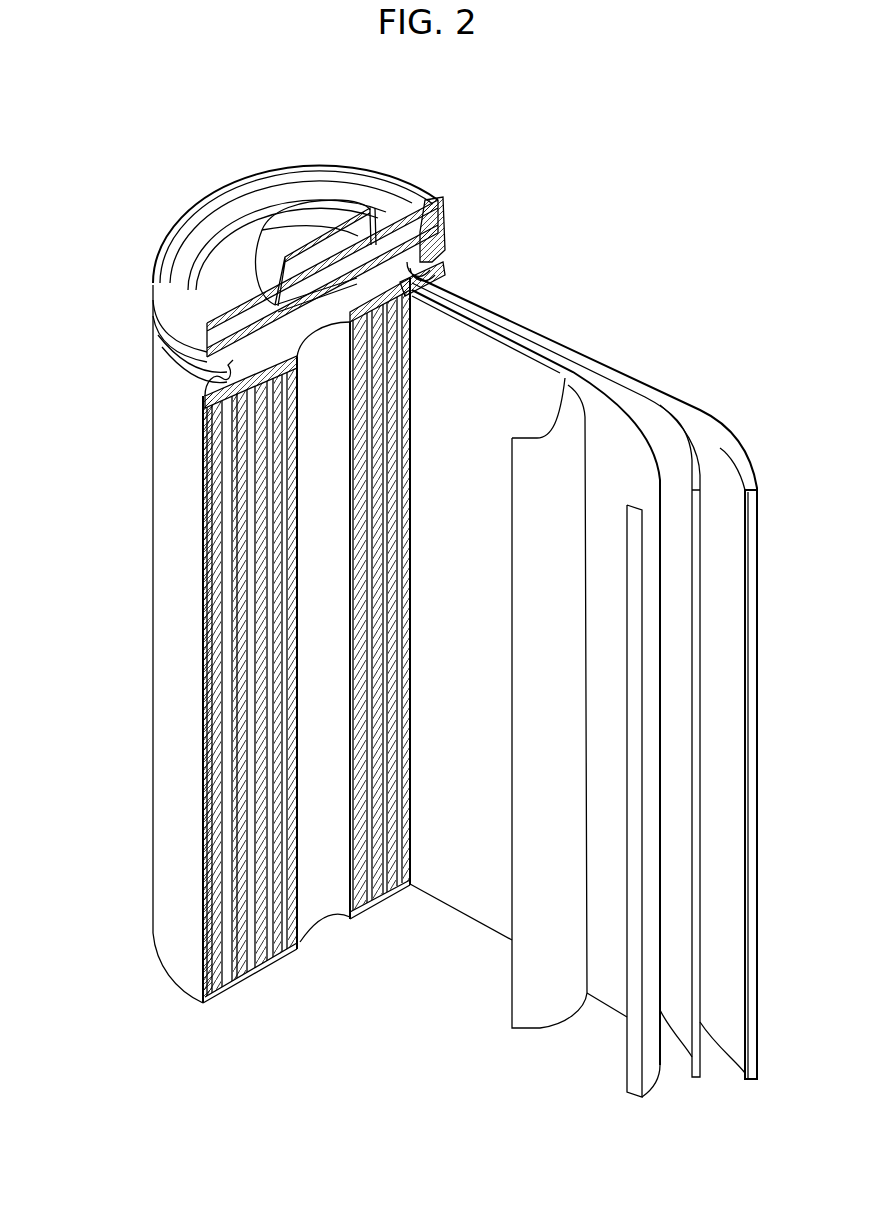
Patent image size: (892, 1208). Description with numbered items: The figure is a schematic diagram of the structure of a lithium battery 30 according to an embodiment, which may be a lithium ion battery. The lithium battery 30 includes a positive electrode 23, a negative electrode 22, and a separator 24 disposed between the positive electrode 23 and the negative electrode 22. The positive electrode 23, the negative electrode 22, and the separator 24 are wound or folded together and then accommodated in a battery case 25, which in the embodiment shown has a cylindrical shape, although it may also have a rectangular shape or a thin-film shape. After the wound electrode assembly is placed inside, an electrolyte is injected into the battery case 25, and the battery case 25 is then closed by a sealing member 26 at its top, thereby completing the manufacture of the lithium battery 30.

The lithium battery 30 is at (360, 104).
The negative electrode 22 is at (735, 448).
The positive electrode 23 is at (645, 447).
The separator 24 is at (551, 437).
The battery case 25 is at (160, 638).
The sealing member 26 is at (290, 218).